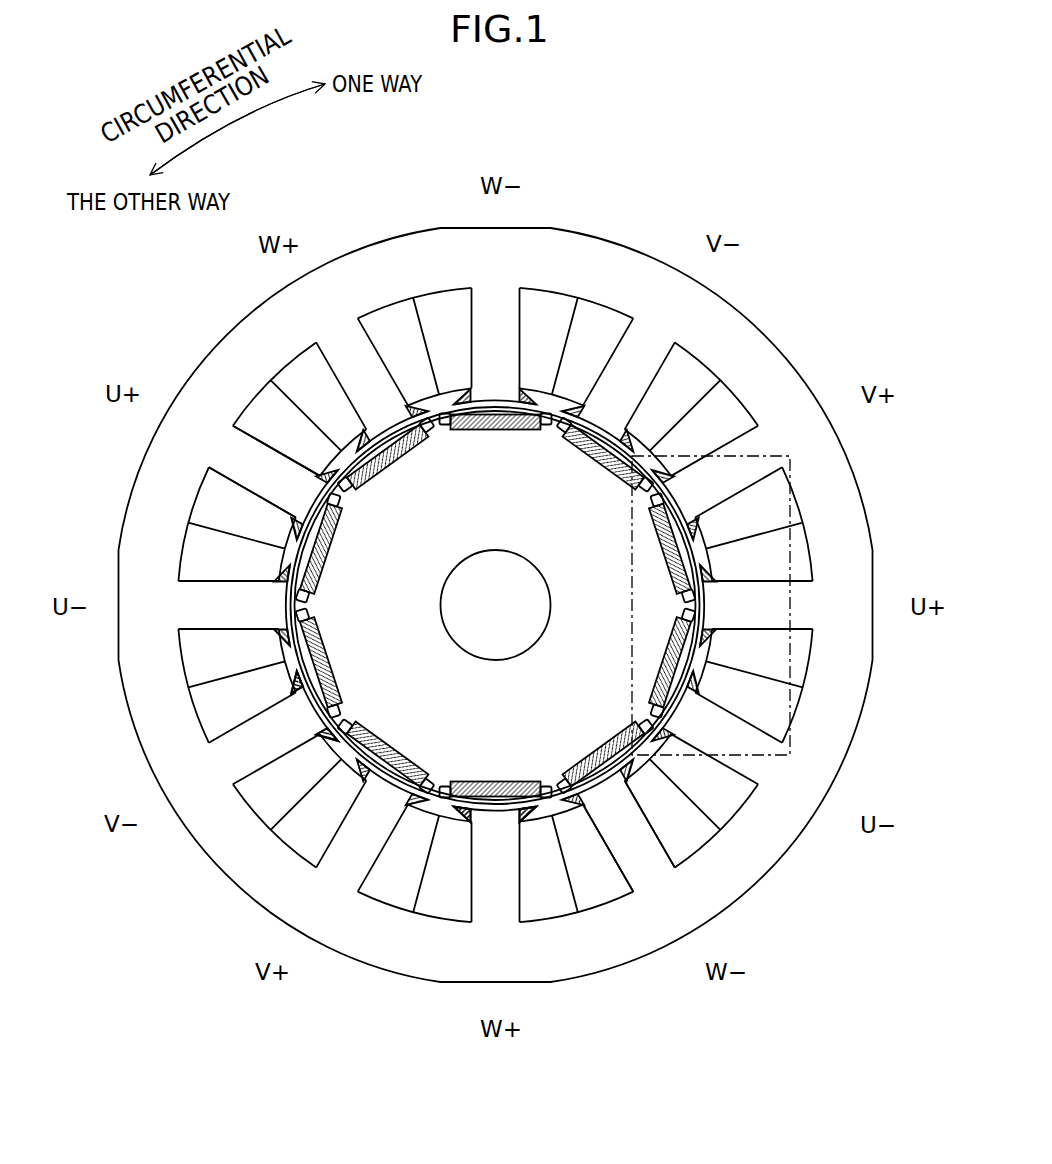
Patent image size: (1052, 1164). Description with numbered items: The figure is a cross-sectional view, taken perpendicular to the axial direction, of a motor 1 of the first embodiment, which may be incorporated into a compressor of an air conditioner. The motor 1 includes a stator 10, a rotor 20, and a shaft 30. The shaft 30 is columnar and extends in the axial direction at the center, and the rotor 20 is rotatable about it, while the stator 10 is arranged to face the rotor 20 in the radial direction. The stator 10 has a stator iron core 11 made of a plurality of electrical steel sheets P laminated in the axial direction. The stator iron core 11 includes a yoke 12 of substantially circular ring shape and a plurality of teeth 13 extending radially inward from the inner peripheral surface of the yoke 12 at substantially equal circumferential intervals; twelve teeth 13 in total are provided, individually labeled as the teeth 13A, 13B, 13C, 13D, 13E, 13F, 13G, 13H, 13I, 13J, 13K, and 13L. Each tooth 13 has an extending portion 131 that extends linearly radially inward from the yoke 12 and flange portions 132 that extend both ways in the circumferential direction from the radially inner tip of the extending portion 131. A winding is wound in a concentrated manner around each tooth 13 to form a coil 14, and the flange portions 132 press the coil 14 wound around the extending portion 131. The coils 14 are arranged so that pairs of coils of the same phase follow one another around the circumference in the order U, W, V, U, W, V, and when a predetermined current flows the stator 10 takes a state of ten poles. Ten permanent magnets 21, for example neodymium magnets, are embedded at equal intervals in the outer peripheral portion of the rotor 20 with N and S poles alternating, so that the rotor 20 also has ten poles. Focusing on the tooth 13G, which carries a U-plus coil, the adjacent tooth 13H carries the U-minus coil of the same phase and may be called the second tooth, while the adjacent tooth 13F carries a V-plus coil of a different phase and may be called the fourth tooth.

The motor 1 is at (746, 168).
The stator 10 is at (624, 246).
The stator iron core 11 is at (884, 270).
The yoke 12 is at (758, 350).
The teeth 13 is at (755, 460).
The tooth 13A is at (232, 595).
The tooth 13B is at (266, 481).
The tooth 13C is at (350, 354).
The tooth 13D is at (512, 322).
The tooth 13E is at (645, 356).
The tooth 13F is at (732, 478).
The tooth 13G is at (767, 608).
The tooth 13H is at (723, 747).
The tooth 13I is at (630, 830).
The tooth 13J is at (512, 880).
The tooth 13K is at (365, 828).
The tooth 13L is at (260, 718).
The extending portion 131 is at (267, 460).
The flange portions 132 is at (280, 640).
The coil 14 is at (449, 317).
The rotor 20 is at (513, 523).
The permanent magnets 21 is at (332, 552).
The shaft 30 is at (513, 618).
The electrical steel sheets P is at (853, 530).